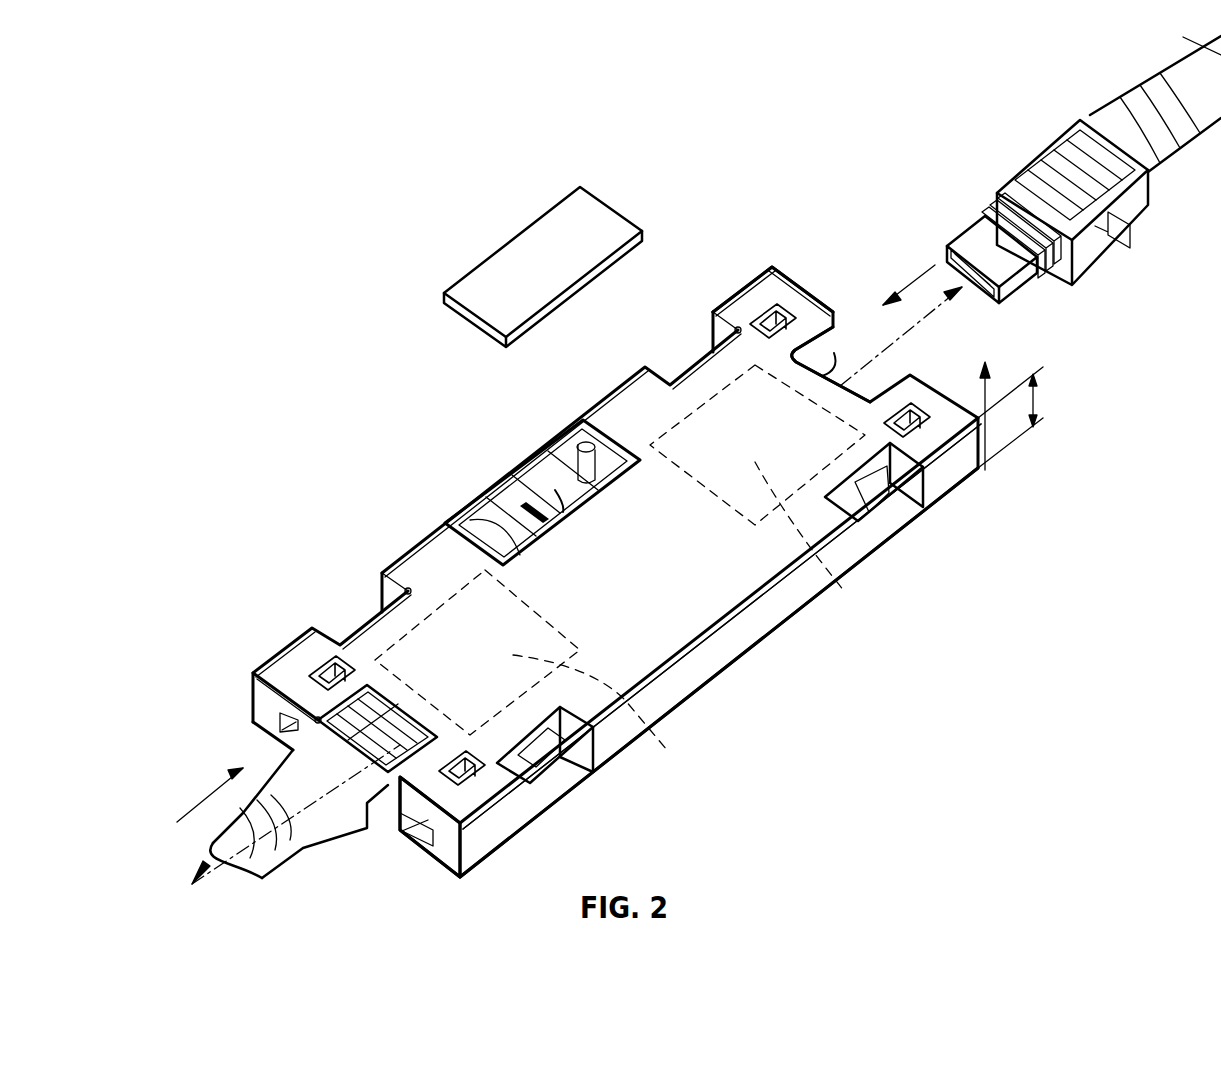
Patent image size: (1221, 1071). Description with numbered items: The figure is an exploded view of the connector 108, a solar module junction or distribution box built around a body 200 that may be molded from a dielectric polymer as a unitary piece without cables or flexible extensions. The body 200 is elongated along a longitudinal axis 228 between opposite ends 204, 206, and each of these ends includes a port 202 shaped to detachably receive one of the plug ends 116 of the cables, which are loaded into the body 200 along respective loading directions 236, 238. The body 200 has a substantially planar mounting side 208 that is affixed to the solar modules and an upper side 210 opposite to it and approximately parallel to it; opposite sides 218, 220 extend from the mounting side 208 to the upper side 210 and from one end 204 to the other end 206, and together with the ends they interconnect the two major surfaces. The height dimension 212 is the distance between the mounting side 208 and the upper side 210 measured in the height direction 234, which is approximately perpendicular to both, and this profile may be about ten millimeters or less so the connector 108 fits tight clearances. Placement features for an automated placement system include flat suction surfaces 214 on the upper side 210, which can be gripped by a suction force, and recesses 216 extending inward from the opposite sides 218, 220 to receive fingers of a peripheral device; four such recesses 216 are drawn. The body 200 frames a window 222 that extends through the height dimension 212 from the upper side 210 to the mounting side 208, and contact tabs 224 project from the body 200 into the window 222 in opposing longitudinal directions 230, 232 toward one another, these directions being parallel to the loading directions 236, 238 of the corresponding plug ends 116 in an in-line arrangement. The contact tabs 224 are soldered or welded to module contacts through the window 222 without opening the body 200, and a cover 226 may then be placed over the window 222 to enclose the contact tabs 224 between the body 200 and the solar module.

The connector 108 is at (293, 667).
The plug ends 116 is at (1050, 137).
The body 200 is at (752, 622).
The ports 202 is at (832, 353).
The end 204 is at (432, 860).
The end 206 is at (797, 268).
The mounting side 208 is at (693, 697).
The upper side 210 is at (743, 548).
The height dimension 212 is at (1035, 402).
The suction surfaces 214 is at (838, 588).
The recesses 216 is at (360, 625).
The side 218 is at (718, 655).
The side 220 is at (410, 548).
The window 222 is at (535, 480).
The contact tabs 224 is at (558, 470).
The cover 226 is at (473, 289).
The longitudinal axis 228 is at (925, 318).
The longitudinal direction 230 is at (500, 500).
The longitudinal direction 232 is at (505, 475).
The height direction 234 is at (985, 430).
The loading direction 236 is at (198, 800).
The loading direction 238 is at (927, 265).